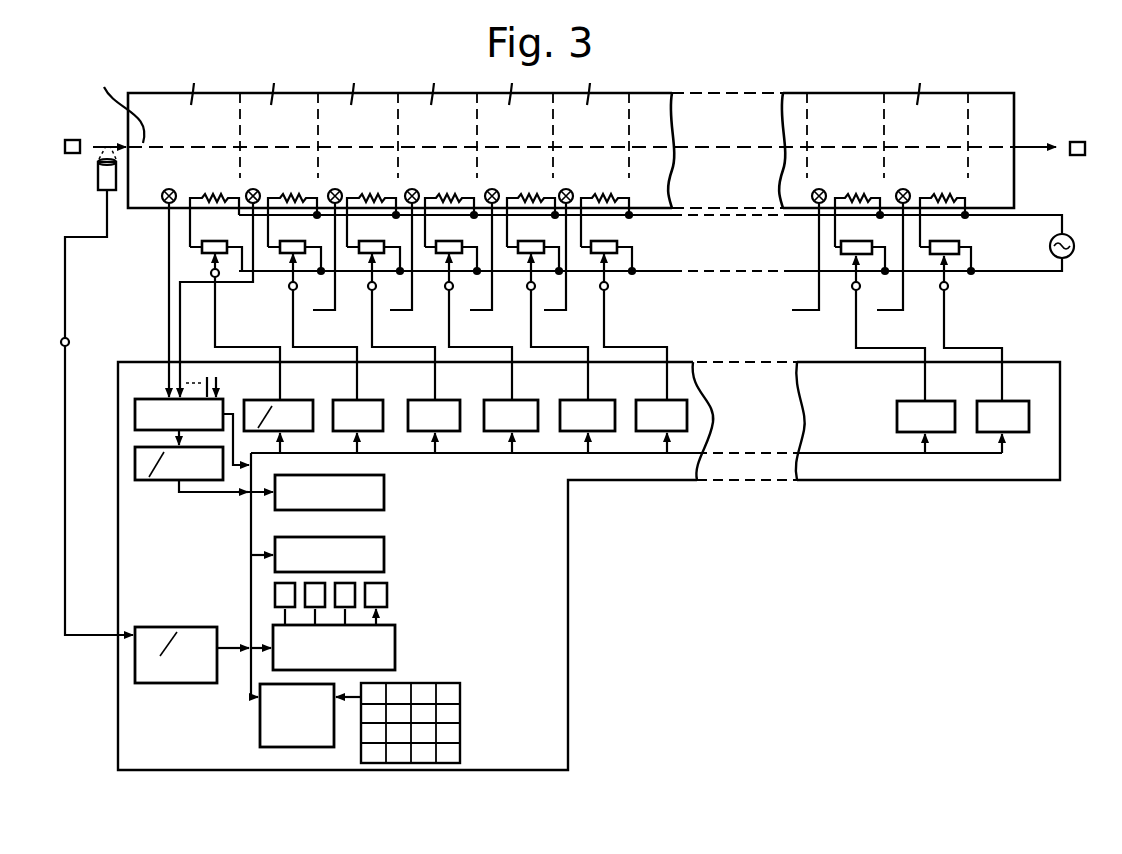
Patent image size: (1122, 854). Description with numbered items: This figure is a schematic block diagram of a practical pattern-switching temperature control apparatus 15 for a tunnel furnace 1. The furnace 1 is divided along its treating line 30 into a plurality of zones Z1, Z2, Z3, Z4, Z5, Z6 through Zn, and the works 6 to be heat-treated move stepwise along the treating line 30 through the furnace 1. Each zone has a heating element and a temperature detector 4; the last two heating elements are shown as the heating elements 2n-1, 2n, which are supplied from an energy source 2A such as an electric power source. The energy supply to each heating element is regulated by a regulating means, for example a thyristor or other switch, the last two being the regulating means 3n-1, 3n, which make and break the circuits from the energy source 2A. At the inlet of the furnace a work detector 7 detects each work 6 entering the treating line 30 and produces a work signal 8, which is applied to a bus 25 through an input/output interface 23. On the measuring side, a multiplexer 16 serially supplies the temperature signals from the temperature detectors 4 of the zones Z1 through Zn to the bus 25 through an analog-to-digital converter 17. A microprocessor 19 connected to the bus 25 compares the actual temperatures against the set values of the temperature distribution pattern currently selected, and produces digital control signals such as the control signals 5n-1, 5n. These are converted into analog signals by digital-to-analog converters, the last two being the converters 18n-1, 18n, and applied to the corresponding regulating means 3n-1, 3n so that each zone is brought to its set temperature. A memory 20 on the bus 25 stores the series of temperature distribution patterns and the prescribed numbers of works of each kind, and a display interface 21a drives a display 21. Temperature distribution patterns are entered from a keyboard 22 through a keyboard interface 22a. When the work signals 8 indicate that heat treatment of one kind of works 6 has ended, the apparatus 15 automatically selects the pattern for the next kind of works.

The furnace 1 is at (1016, 102).
The treating line 30 is at (118, 101).
The zone Z1 is at (199, 82).
The zone Z2 is at (278, 82).
The zone Z3 is at (358, 82).
The zone Z4 is at (438, 82).
The zone Z5 is at (516, 82).
The zone Z6 is at (594, 82).
The zone Zn is at (922, 82).
The work 6 is at (70, 140).
The work detector 7 is at (97, 167).
The work signal 8 is at (62, 339).
The energy source 2A is at (1081, 238).
The temperature detector 4 is at (163, 205).
The heating element 2n-1 is at (859, 220).
The heating element 2n is at (938, 196).
The regulating means 3n-1 is at (886, 236).
The regulating means 3n is at (956, 246).
The control signal 5n-1 is at (852, 291).
The control signal 5n is at (945, 289).
The temperature control apparatus 15 is at (594, 510).
The multiplexer 16 is at (134, 413).
The analog-to-digital (A/D) converter 17 is at (134, 461).
The digital-to-analog (D/A) converter 18n-1 is at (941, 406).
The digital-to-analog (D/A) converter 18n is at (1019, 406).
The microprocessor (MCRPR) 19 is at (384, 492).
The memory 20 is at (384, 552).
The display 21 is at (387, 595).
The display interface 21a is at (395, 645).
The keyboard 22 is at (460, 735).
The keyboard interface 22a is at (260, 716).
The input/output interface 23 is at (208, 627).
The bus 25 is at (250, 573).